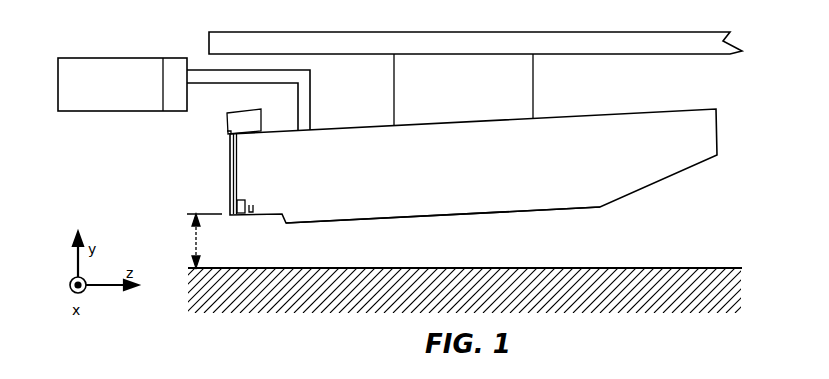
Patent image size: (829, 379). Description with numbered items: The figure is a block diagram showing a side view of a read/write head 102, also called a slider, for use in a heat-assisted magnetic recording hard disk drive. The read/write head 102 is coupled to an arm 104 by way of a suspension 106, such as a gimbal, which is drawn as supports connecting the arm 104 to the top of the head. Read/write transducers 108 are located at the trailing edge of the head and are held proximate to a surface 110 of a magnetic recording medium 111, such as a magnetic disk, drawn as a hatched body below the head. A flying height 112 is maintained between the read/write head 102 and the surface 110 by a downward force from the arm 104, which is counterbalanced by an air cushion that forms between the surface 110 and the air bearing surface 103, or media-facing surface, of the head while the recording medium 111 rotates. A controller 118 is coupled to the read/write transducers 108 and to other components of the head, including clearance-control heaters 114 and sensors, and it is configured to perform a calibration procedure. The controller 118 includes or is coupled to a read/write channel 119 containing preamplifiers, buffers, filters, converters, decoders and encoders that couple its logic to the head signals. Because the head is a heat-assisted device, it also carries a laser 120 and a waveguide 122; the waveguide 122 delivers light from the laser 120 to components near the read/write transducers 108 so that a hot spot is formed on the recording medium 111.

The read/write head 102 is at (633, 118).
The air bearing surface 103 is at (360, 222).
The arm 104 is at (675, 38).
The suspension 106 is at (534, 84).
The read/write transducers 108 is at (238, 197).
The surface 110 is at (635, 268).
The magnetic recording medium 111 is at (650, 300).
The flying height 112 is at (191, 241).
The clearance-control heaters 114 is at (250, 203).
The controller 118 is at (107, 57).
The read/write channel 119 is at (173, 57).
The laser 120 is at (243, 117).
The waveguide 122 is at (230, 155).